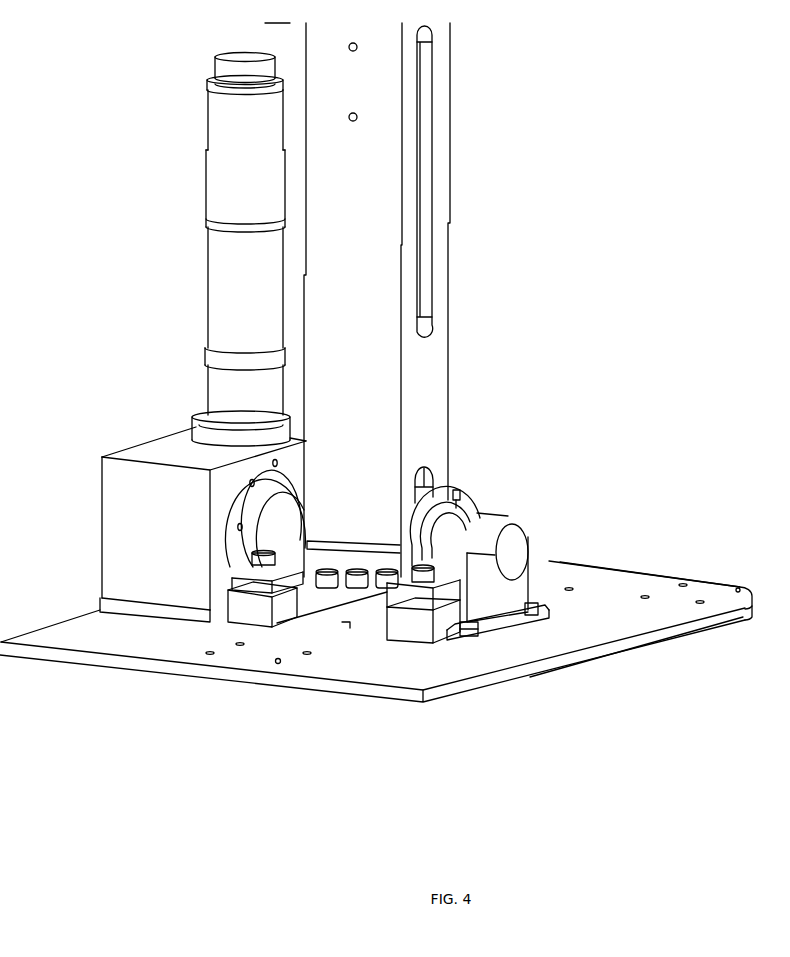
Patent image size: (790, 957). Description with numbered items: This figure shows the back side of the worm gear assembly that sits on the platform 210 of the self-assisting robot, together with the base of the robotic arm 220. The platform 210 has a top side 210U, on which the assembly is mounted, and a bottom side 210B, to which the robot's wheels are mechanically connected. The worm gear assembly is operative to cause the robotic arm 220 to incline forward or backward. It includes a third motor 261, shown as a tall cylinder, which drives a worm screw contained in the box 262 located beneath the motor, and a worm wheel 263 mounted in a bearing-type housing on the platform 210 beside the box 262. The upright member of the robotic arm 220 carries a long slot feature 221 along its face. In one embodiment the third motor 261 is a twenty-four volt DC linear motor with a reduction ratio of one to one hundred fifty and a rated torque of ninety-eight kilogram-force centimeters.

The platform 210 is at (87, 660).
The top side 210U is at (603, 581).
The bottom side 210B is at (605, 647).
The robotic arm 220 is at (543, 168).
The guide slot of support column 221 is at (448, 272).
The third motor 261 is at (205, 272).
The box 262 is at (148, 448).
The worm wheel 263 is at (472, 498).